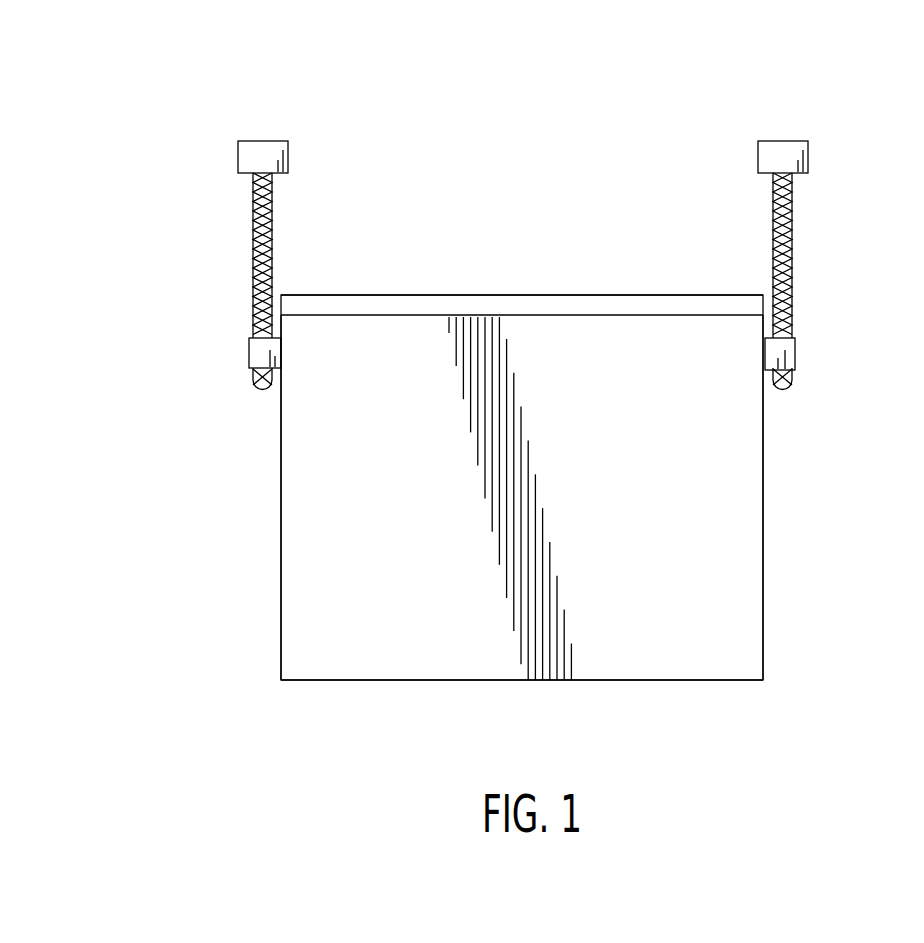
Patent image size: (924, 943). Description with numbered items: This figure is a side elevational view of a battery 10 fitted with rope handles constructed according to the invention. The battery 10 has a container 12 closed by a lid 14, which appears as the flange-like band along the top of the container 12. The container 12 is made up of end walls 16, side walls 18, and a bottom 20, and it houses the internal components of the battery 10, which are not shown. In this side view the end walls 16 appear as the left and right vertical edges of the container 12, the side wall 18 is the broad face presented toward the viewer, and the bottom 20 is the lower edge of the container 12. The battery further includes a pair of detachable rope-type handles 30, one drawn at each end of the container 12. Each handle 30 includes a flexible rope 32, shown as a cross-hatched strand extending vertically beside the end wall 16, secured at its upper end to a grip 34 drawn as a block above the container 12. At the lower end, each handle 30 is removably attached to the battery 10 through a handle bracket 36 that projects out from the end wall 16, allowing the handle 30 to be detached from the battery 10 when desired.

The battery 10 is at (210, 545).
The container 12 is at (291, 600).
The lid 14 is at (523, 295).
The end wall 16 is at (281, 490).
The side wall 18 is at (593, 502).
The bottom 20 is at (523, 680).
The rope-type handle 30 is at (210, 145).
The flexible rope 32 is at (272, 255).
The grip 34 is at (276, 158).
The handle bracket 36 is at (249, 352).